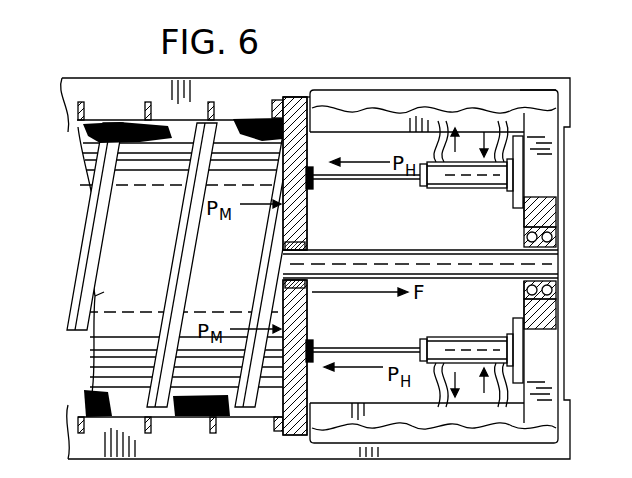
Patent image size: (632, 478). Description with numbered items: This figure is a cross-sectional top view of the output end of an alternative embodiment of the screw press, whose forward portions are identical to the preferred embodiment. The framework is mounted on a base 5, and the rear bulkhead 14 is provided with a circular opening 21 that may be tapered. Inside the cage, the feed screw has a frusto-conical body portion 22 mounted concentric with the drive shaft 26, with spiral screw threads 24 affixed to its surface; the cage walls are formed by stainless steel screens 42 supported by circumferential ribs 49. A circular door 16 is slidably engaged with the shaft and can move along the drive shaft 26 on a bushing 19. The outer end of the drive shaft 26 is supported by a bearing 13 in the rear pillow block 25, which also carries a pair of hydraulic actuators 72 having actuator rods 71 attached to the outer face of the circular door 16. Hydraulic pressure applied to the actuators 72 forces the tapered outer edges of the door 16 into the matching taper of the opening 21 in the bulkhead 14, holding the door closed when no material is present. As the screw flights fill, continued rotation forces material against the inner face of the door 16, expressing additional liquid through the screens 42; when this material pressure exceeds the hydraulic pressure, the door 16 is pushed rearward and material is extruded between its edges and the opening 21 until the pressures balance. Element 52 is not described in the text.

The base 5 is at (478, 84).
The bearing 13 is at (557, 236).
The rear bulkhead 14 is at (277, 103).
The circular door 16 is at (308, 223).
The bushing 19 is at (310, 247).
The circular opening 21 is at (306, 98).
The body portion 22 is at (100, 294).
The spiral screw threads 24 is at (196, 261).
The pillow block 25 is at (555, 190).
The drive shaft 26 is at (445, 250).
The screens 42 is at (150, 421).
The circumferential ribs 49 is at (218, 421).
The housing cover 52 is at (563, 102).
The actuator rods 71 is at (387, 181).
The hydraulic actuators 72 is at (482, 188).